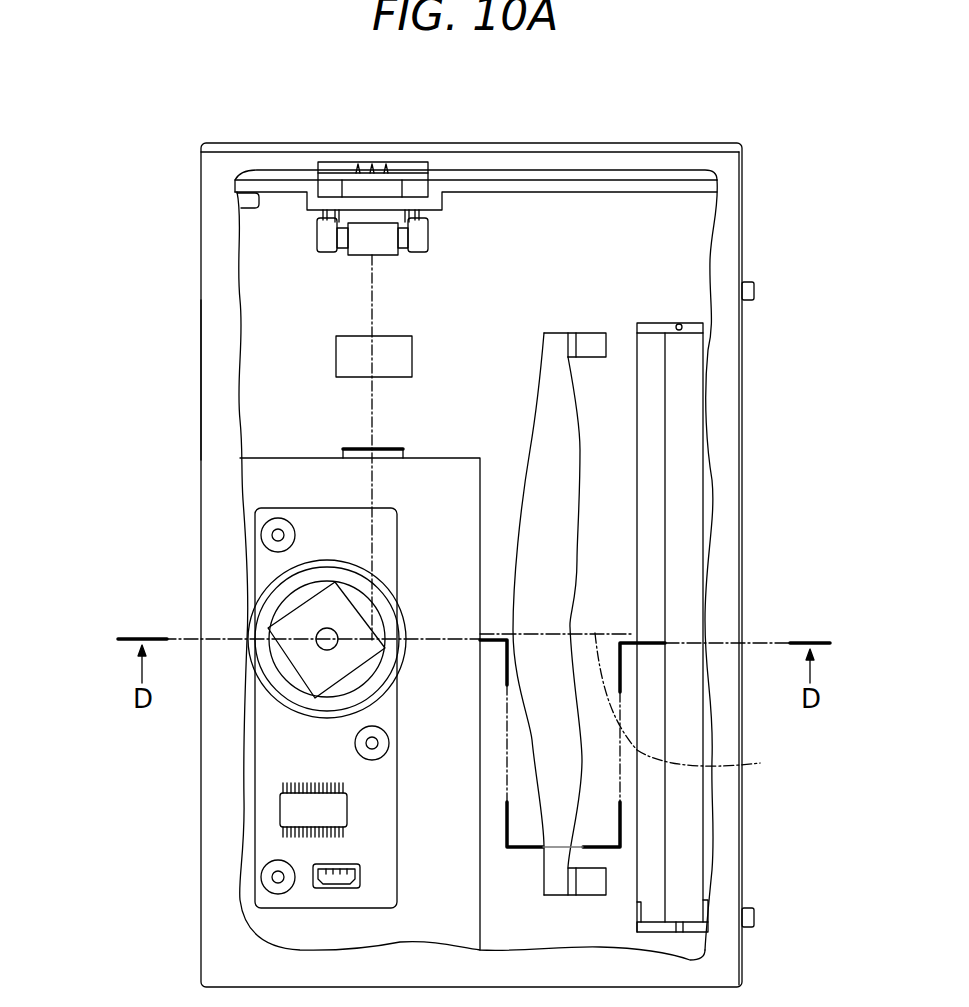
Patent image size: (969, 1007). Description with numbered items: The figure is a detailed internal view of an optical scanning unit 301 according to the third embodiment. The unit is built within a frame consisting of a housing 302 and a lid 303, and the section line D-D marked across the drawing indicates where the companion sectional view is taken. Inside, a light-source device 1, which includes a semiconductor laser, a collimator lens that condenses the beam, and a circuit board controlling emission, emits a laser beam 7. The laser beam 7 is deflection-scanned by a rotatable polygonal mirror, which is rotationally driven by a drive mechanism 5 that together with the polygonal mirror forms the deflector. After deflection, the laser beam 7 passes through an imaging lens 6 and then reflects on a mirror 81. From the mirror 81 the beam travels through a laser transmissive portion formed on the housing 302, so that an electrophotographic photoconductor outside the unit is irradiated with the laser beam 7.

The optical scanning unit 301 is at (92, 72).
The housing 302 is at (647, 252).
The lid 303 is at (216, 378).
The light-source device 1 is at (370, 237).
The drive mechanism 5 is at (318, 528).
The imaging lens 6 is at (555, 483).
The mirror 81 is at (680, 390).
The laser beam 7 is at (713, 767).